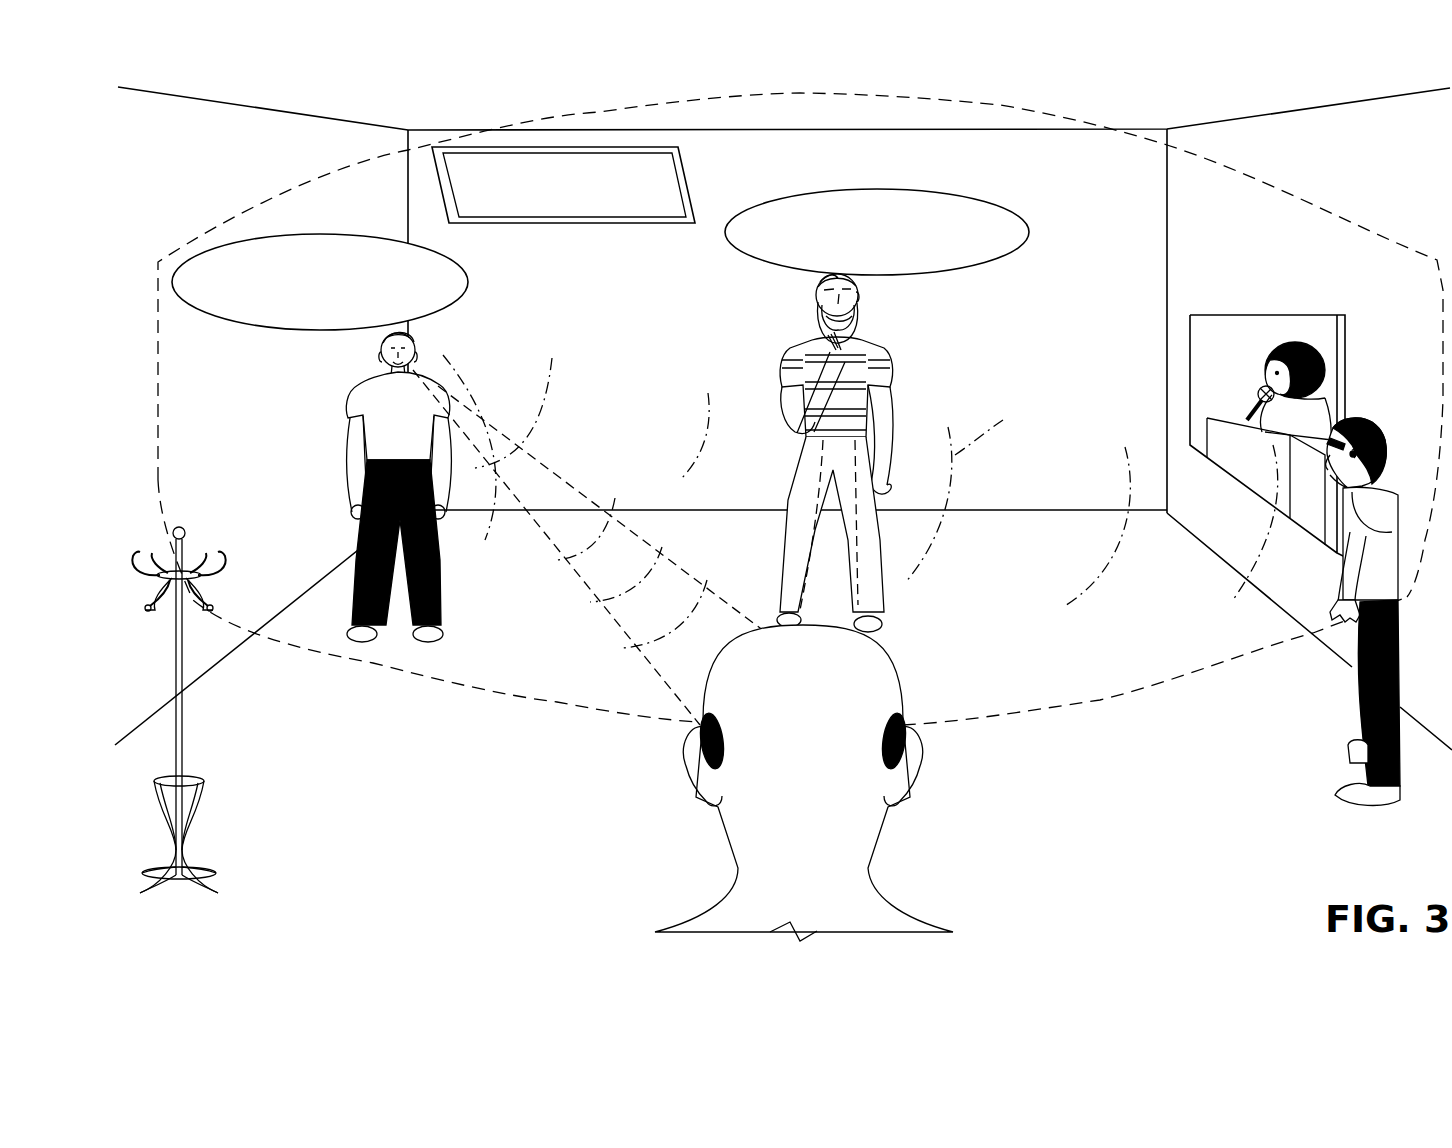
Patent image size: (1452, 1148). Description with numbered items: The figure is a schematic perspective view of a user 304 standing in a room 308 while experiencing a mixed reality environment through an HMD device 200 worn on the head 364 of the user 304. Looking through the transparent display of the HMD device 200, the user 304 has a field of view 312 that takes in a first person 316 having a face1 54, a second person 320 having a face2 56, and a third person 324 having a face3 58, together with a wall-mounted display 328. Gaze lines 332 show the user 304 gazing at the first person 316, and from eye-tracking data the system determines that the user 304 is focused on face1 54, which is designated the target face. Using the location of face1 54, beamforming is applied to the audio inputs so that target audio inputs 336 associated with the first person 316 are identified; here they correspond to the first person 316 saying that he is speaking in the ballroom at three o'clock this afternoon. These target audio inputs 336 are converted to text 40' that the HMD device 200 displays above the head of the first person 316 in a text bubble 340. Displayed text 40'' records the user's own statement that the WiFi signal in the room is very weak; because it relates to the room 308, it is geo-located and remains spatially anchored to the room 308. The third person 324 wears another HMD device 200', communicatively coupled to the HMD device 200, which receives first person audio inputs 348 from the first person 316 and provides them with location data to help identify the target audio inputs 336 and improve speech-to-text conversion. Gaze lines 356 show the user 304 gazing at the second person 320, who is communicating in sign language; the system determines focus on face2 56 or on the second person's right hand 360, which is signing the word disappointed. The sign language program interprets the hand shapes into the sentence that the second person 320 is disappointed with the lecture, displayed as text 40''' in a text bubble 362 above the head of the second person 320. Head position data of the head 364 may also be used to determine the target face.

The room 308 is at (1040, 132).
The field of view 312 is at (1305, 190).
The first person 316 is at (345, 428).
The second person 320 is at (775, 363).
The third person 324 is at (1325, 708).
The wall-mounted display 328 is at (1232, 315).
The gaze lines 332 is at (740, 577).
The target audio inputs 336 is at (545, 462).
The text bubble 340 is at (240, 238).
The first person audio inputs 348 is at (1091, 502).
The gaze lines 356 is at (818, 468).
The right hand 360 is at (822, 348).
The text bubble 362 is at (813, 190).
The head 364 is at (787, 679).
The user 304 is at (920, 852).
The HMD device 200 is at (772, 761).
The HMD device 200' is at (1363, 413).
The face1 54 is at (390, 363).
The face2 56 is at (856, 308).
The face3 58 is at (1348, 484).
The text 40' is at (491, 263).
The displayed text 40'' is at (574, 211).
The text 40''' is at (1034, 233).